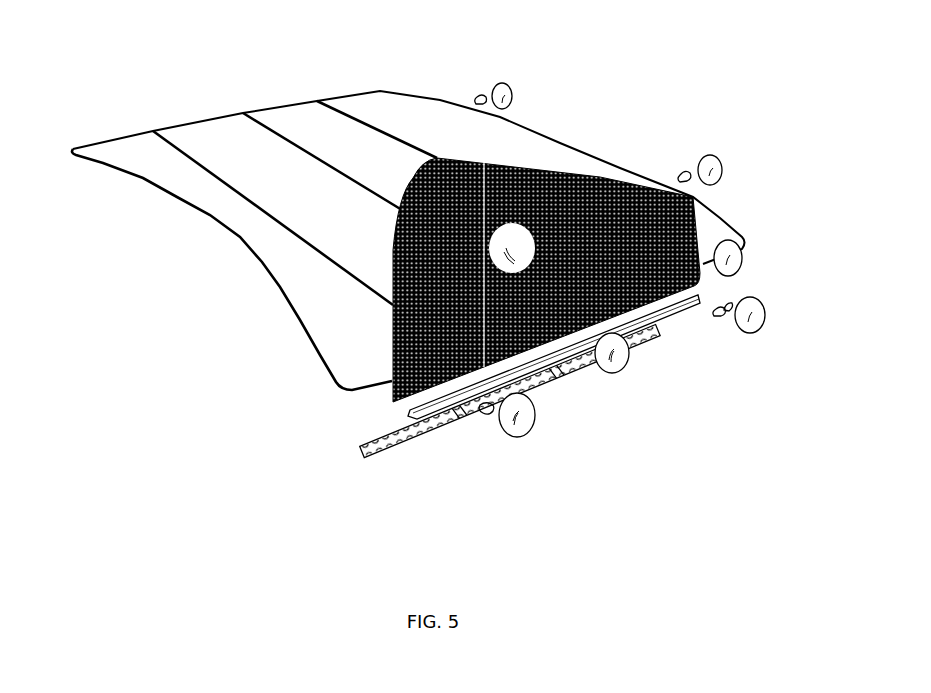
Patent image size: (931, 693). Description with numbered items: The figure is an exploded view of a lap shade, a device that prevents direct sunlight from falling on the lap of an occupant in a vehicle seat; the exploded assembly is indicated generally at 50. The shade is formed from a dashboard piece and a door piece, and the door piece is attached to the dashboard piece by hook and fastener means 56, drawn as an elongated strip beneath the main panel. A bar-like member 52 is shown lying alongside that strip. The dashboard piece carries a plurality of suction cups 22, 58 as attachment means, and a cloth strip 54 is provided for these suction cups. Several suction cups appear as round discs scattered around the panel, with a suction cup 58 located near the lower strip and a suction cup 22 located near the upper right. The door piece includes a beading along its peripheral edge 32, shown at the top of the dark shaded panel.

The wing assembly 50 is at (663, 72).
The peripheral edge 32 is at (582, 172).
The suction cups 22 is at (721, 154).
The cloth strip 54 is at (687, 170).
The stringer bar 52 is at (683, 312).
The hook and fastener means 56 is at (408, 442).
The suction cups 58 is at (527, 422).